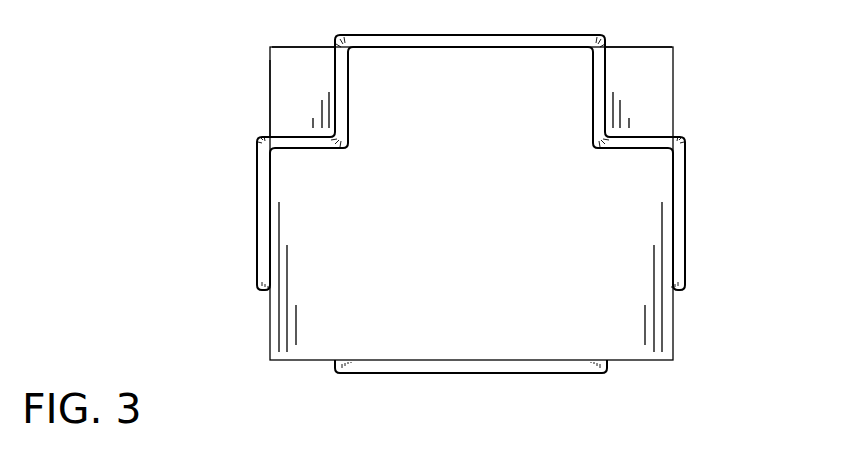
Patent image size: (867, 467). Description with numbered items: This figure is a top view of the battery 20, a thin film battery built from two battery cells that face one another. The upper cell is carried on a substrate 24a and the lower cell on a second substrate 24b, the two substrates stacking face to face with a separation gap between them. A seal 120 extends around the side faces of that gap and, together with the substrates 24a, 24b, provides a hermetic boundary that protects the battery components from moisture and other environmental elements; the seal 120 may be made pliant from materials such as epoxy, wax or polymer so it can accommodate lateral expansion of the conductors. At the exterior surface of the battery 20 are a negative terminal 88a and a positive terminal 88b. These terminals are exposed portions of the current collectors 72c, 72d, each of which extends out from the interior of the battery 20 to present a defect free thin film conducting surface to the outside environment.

The battery 20 is at (176, 50).
The substrate 24a is at (492, 214).
The second substrate 24b is at (270, 121).
The current collector 72c is at (655, 62).
The current collector 72d is at (313, 53).
The negative terminal 88a is at (655, 100).
The positive terminal 88b is at (270, 66).
The seal 120 is at (678, 222).